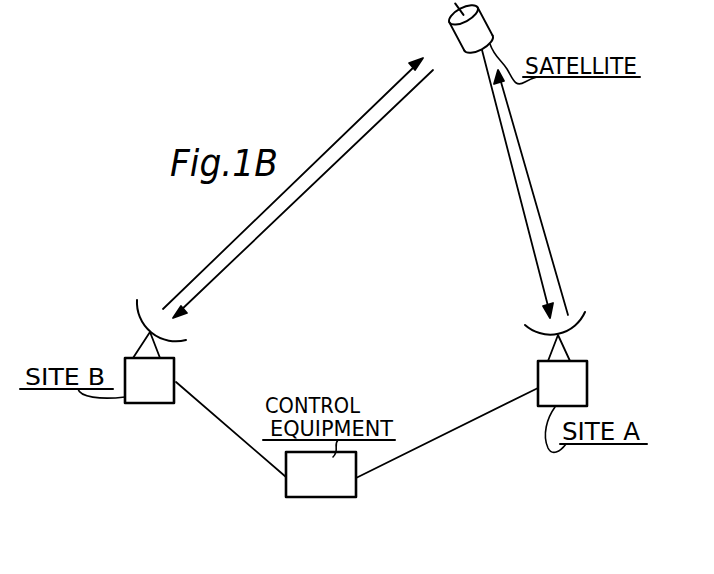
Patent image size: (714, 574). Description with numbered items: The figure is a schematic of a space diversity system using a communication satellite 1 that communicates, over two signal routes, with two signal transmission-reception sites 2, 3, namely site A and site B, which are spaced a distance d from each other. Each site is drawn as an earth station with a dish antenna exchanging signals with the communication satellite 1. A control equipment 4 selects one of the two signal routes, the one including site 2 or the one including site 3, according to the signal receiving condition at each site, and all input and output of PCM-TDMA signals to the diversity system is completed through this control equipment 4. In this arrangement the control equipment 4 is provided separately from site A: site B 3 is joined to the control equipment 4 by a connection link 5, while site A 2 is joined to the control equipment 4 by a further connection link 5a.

The communication satellite 1 is at (487, 20).
The signal transmission-reception site 2 is at (583, 377).
The signal transmission-reception site 3 is at (171, 369).
The control equipment 4 is at (347, 486).
The connection link 5 is at (222, 424).
The connection link 5a is at (461, 430).